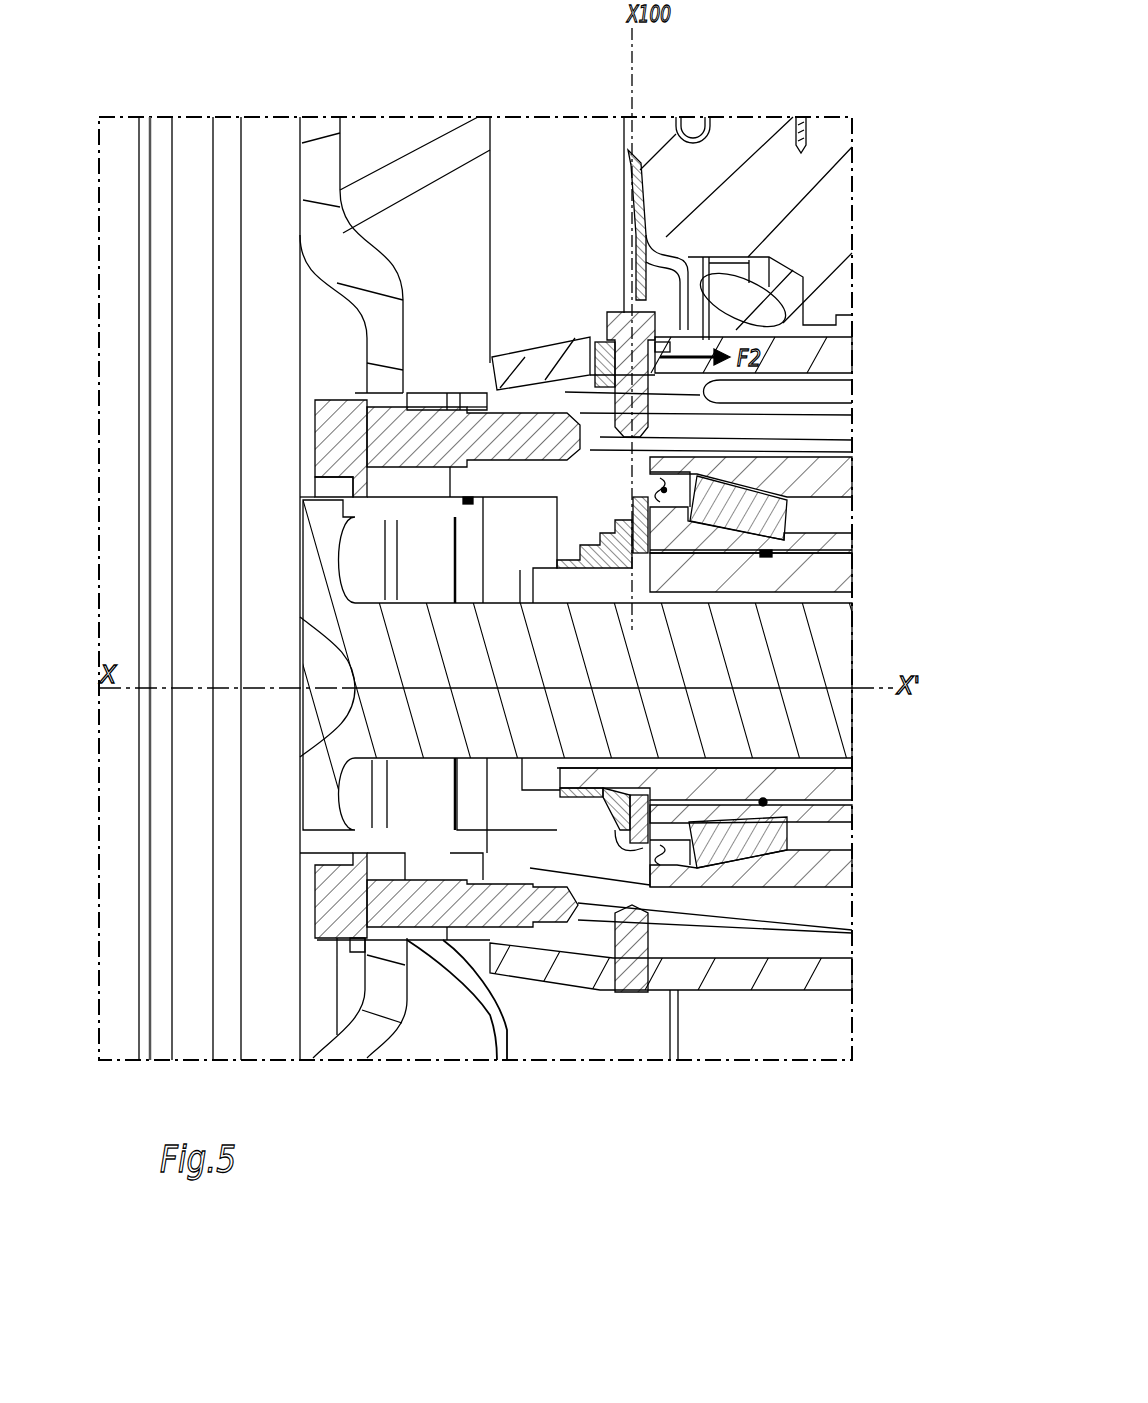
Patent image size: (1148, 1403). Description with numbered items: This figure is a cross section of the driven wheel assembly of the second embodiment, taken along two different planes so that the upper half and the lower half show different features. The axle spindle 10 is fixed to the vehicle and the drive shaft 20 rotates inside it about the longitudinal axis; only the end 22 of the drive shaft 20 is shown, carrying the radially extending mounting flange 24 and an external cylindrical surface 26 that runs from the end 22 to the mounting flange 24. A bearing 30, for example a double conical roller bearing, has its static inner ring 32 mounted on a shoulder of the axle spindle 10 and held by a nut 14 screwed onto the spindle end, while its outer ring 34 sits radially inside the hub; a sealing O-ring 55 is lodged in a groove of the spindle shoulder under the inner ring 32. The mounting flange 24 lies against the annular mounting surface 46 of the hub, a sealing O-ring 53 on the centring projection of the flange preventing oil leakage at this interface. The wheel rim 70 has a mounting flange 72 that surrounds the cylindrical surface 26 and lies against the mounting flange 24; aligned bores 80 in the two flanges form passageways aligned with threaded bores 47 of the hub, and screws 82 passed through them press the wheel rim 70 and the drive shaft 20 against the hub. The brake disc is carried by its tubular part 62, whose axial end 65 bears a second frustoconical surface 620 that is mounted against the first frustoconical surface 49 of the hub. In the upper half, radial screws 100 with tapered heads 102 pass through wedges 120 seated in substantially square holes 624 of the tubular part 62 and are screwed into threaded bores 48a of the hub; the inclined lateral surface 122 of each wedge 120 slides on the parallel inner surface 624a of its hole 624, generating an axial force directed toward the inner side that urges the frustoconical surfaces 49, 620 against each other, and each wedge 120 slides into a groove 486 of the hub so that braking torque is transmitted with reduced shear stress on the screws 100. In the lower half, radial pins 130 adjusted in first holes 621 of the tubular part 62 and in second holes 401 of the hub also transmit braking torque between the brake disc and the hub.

The wheel rim 70 is at (292, 128).
The first frustoconical surface 49 is at (530, 373).
The inner surface 624a is at (612, 311).
The tapered head 102 is at (607, 312).
The lateral surface 122 is at (780, 268).
The mounting flange 24 is at (428, 398).
The holes 624 is at (590, 326).
The wedges 120 is at (594, 357).
The tubular part 62 is at (840, 348).
The mounting flange 72 is at (380, 390).
The sealing O-ring 53 is at (475, 410).
The groove 486 is at (820, 398).
The radial screws 100 is at (833, 440).
The mounting surface 46 is at (432, 479).
The outer ring 34 is at (848, 472).
The inner ring 32 is at (843, 540).
The bearing 30 is at (796, 505).
The nut 14 is at (605, 533).
The second frustoconical surface 620 is at (530, 400).
The axle spindle 10 is at (815, 570).
The threaded bores 48a is at (653, 470).
The drive shaft 20 is at (800, 647).
The sealing O-ring 55 is at (765, 800).
The end 22 is at (323, 783).
The external cylindrical surface 26 is at (340, 887).
The screws 82 is at (340, 907).
The bores 80 is at (440, 928).
The bores 47 is at (508, 900).
The axial end 65 is at (455, 940).
The first holes 621 is at (627, 975).
The radial pins 130 is at (662, 930).
The second holes 401 is at (712, 940).